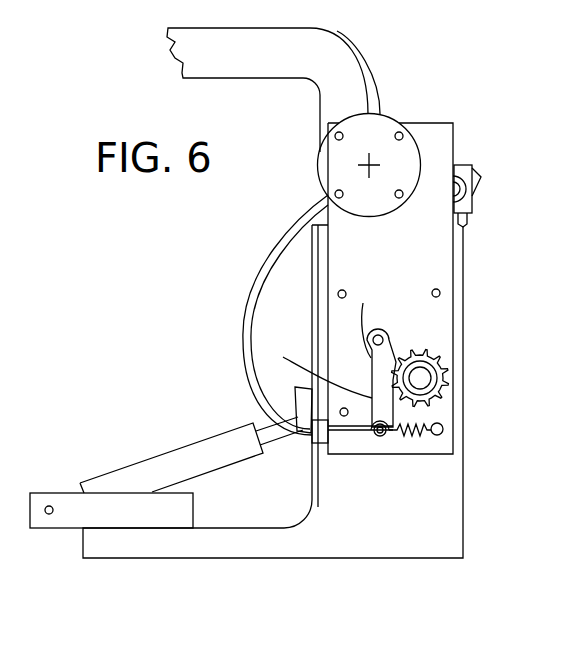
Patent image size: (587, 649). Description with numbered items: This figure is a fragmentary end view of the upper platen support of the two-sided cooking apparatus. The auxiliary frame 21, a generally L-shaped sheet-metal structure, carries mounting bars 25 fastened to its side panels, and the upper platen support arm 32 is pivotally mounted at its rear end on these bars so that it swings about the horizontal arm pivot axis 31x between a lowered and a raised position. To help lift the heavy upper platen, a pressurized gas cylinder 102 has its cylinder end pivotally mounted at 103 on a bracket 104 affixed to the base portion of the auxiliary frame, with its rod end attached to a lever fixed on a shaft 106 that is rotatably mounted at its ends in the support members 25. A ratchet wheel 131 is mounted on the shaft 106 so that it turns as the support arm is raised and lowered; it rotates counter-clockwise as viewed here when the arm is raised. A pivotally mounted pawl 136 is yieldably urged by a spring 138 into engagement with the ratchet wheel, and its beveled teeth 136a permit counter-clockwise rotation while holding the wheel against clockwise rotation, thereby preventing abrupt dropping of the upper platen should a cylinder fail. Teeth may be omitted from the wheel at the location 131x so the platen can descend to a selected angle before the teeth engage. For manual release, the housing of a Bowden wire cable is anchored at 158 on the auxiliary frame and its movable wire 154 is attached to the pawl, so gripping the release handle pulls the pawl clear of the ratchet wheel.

The auxiliary frame 21 is at (486, 408).
The mounting bars 25 is at (430, 224).
The upper platen support arm 32 is at (290, 42).
The arm pivot axis 31x is at (369, 165).
The pressurized gas cylinder 102 is at (175, 465).
The cylinder end pivot 103 is at (47, 514).
The bracket 104 is at (90, 508).
The shaft 106 is at (420, 378).
The ratchet wheel 131 is at (446, 361).
The missing teeth location 131x is at (392, 350).
The pawl 136 is at (374, 318).
The pawl teeth 136a is at (307, 315).
The spring 138 is at (410, 434).
The movable wire 154 is at (350, 432).
The cable housing anchor 158 is at (319, 436).